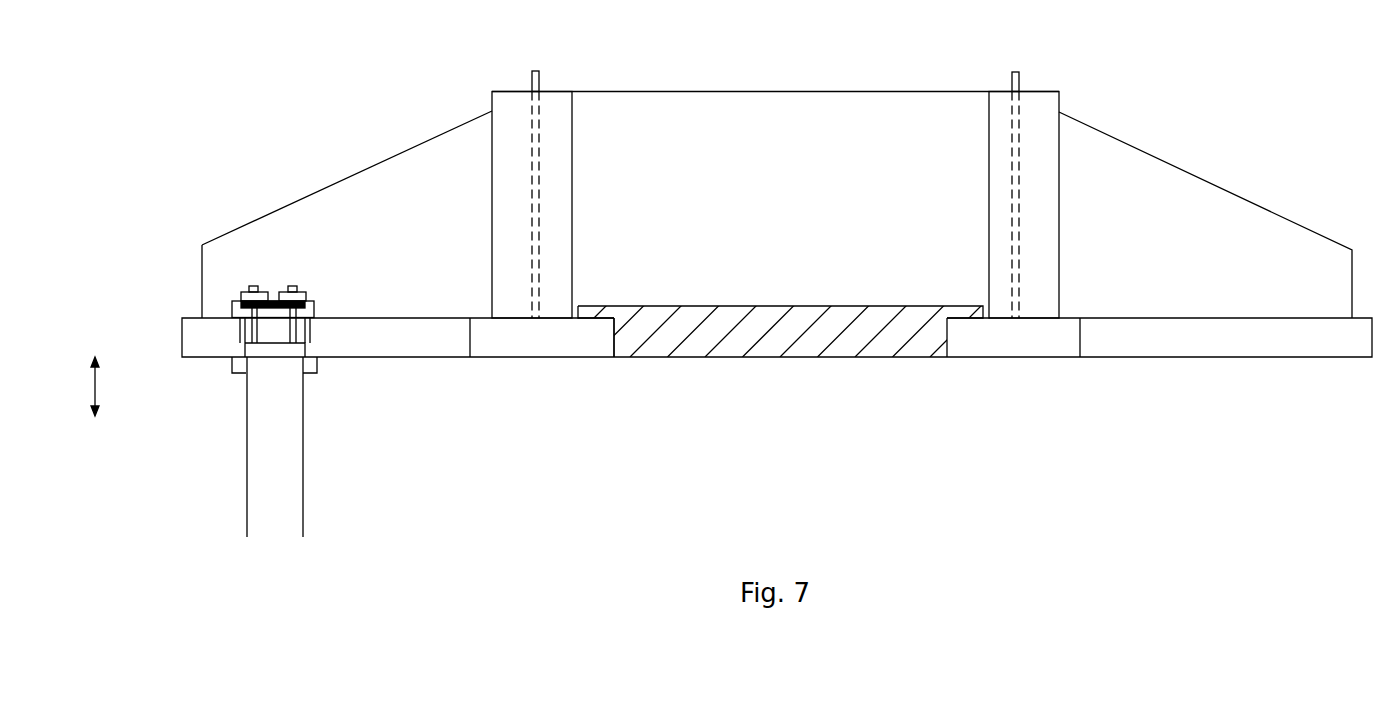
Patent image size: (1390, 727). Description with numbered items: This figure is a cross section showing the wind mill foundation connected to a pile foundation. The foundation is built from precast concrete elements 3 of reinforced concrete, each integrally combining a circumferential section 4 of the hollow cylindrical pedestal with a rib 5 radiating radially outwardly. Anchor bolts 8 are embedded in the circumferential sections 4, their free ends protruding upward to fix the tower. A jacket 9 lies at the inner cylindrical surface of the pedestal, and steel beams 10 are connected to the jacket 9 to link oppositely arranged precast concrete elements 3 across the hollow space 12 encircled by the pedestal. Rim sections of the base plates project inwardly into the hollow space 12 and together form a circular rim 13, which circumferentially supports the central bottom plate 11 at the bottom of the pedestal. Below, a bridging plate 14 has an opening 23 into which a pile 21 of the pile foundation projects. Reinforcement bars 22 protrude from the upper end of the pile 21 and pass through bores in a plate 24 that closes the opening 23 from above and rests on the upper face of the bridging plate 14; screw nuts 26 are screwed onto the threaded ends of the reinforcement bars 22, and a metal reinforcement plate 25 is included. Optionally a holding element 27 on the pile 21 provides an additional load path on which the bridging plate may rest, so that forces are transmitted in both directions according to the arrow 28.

The precast concrete element 3 is at (278, 183).
The circumferential section 4 is at (515, 111).
The rib 5 is at (385, 175).
The anchor bolt 8 is at (535, 80).
The jacket 9 is at (935, 88).
The steel beam 10 is at (738, 88).
The central bottom plate 11 is at (713, 330).
The hollow space 12 is at (822, 307).
The circular rim 13 is at (593, 340).
The bridging plate 14 is at (343, 348).
The pile 21 is at (252, 393).
The reinforcement bar 22 is at (253, 327).
The opening 23 is at (303, 330).
The plate 24 is at (237, 305).
The reinforcement plate 25 is at (305, 303).
The screw nut 26 is at (242, 293).
The holding element 27 is at (317, 363).
The arrow 28 is at (79, 386).